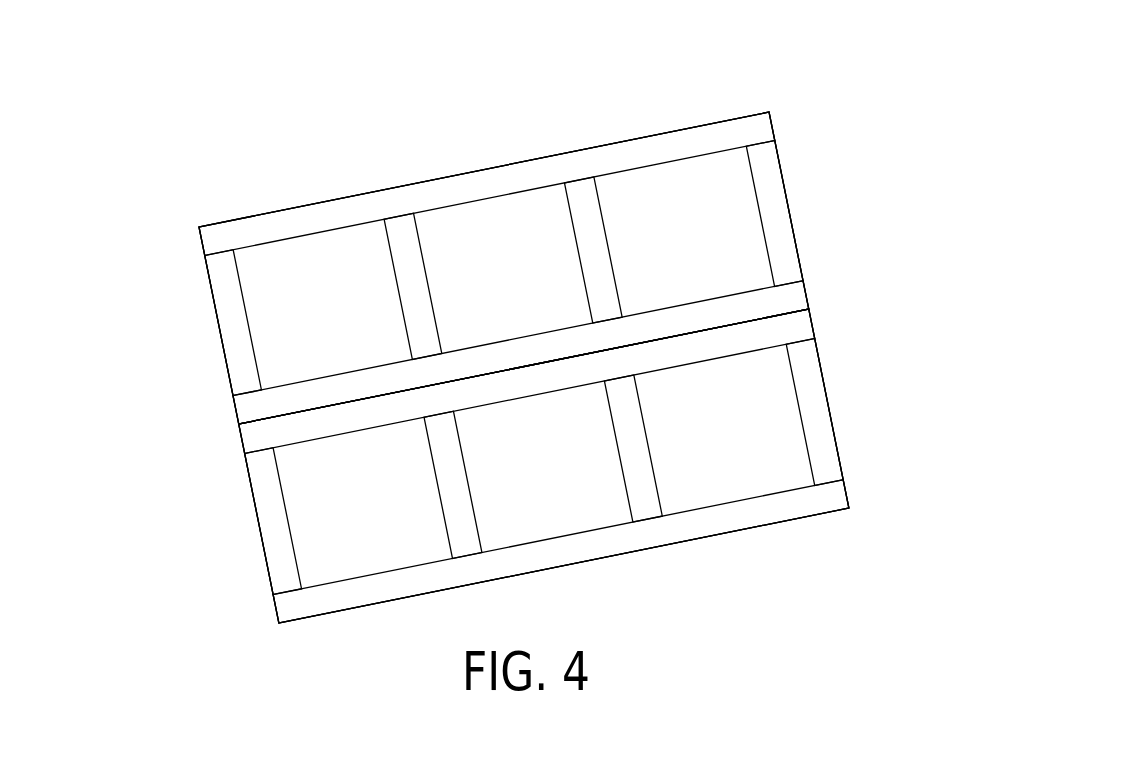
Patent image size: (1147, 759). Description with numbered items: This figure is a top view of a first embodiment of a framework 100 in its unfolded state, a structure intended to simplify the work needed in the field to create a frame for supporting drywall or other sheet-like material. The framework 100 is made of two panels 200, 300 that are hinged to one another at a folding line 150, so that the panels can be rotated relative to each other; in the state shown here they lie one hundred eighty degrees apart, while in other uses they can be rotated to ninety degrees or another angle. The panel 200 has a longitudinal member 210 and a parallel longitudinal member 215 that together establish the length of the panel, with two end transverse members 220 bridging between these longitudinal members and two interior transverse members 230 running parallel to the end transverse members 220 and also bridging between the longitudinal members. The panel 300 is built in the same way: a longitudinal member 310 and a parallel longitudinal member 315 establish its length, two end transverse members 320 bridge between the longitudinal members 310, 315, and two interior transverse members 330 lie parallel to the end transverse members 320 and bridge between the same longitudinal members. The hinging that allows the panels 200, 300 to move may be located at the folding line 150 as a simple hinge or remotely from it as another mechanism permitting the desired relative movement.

The framework 100 is at (881, 192).
The folding line 150 is at (238, 427).
The panel 200 is at (708, 122).
The longitudinal member 210 is at (539, 172).
The longitudinal member 215 is at (793, 297).
The end transverse members 220 is at (778, 210).
The interior transverse members 230 is at (592, 271).
The panel 300 is at (827, 513).
The longitudinal member 310 is at (745, 515).
The longitudinal member 315 is at (800, 327).
The end transverse members 320 is at (813, 412).
The interior transverse members 330 is at (637, 458).